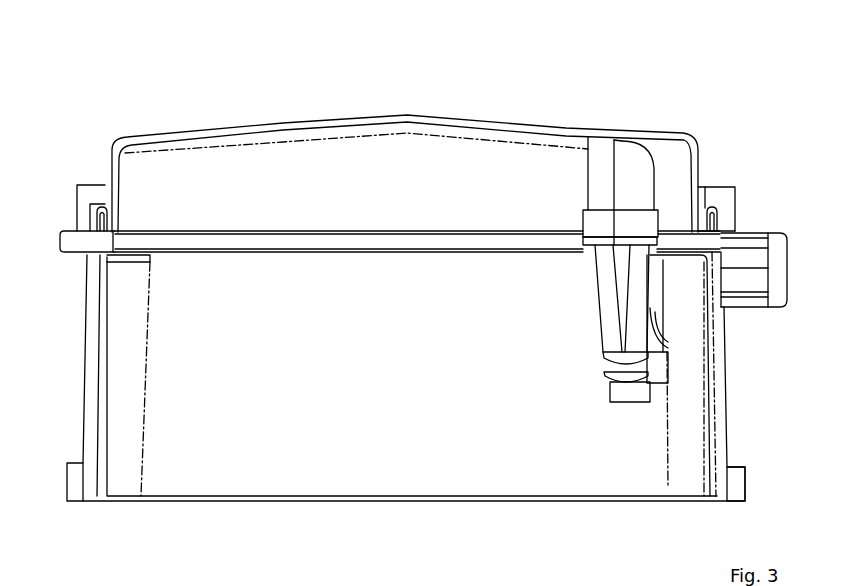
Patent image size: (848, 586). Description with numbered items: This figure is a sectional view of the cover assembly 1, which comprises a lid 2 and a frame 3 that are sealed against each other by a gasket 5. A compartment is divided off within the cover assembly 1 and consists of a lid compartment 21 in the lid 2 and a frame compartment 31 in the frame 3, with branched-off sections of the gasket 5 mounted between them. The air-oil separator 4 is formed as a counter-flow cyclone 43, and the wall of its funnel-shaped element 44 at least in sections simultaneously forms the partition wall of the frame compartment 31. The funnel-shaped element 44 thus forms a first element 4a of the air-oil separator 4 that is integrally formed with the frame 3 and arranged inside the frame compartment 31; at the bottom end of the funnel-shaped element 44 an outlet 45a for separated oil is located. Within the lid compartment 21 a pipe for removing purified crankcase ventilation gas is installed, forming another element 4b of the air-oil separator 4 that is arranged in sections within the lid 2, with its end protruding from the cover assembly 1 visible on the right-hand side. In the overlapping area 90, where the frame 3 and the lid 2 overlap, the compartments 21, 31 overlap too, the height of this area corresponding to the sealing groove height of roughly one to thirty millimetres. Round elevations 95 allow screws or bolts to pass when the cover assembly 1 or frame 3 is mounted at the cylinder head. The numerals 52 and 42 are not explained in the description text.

The cover assembly 1 is at (148, 110).
The lid 2 is at (546, 127).
The lid compartment 21 is at (596, 167).
The pipe element of the air-oil separator 4b is at (631, 185).
The mounting bracket 52 is at (708, 212).
The gasket 5 is at (711, 223).
The connector block 42 is at (750, 253).
The overlapping area 90 is at (60, 239).
The frame 3 is at (133, 436).
The round elevations 95 is at (733, 488).
The frame compartment 31 is at (632, 252).
The air-oil separator 4 is at (621, 260).
The first element of the air-oil separator 4a is at (597, 288).
The funnel-shaped element 44 is at (647, 252).
The counter-flow cyclone 43 is at (649, 318).
The outlet for separated oil 45a is at (632, 383).